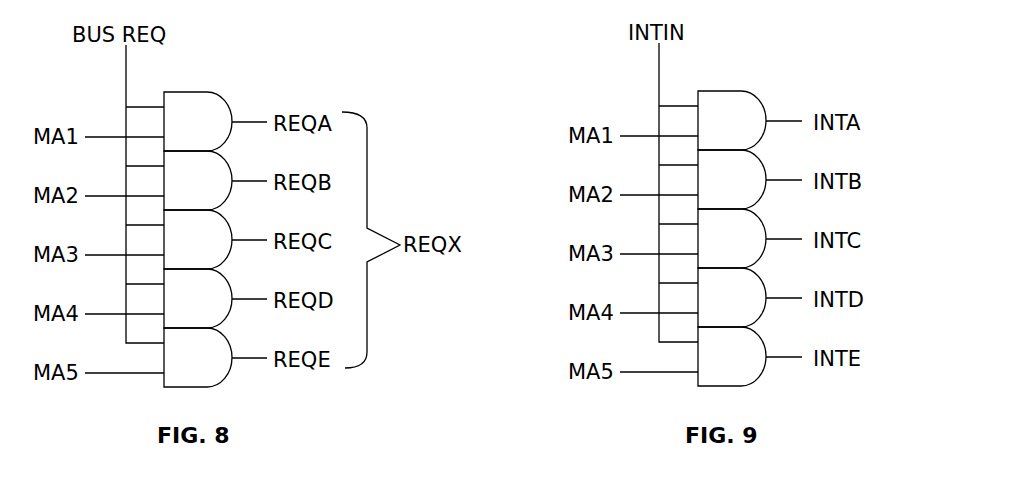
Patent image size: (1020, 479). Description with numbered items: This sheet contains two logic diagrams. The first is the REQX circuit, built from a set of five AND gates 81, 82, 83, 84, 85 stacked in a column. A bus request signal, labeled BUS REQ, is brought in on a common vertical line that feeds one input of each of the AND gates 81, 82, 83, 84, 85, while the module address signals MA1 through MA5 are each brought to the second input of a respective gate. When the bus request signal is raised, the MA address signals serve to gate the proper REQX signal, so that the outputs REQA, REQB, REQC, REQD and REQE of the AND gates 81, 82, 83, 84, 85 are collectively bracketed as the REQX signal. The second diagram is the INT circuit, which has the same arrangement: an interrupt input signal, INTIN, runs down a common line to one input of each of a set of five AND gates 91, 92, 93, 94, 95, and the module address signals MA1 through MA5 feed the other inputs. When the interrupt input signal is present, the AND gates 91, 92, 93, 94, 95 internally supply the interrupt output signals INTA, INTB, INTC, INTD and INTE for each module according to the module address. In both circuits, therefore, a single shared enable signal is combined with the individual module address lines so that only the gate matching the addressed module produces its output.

In FIG. 8, the AND gate 81 is at (203, 137).
In FIG. 8, the AND gate 82 is at (203, 196).
In FIG. 8, the AND gate 83 is at (203, 255).
In FIG. 8, the AND gate 84 is at (203, 314).
In FIG. 8, the AND gate 85 is at (203, 373).
In FIG. 9, the AND gate 91 is at (737, 136).
In FIG. 9, the AND gate 92 is at (737, 195).
In FIG. 9, the AND gate 93 is at (737, 254).
In FIG. 9, the AND gate 94 is at (737, 313).
In FIG. 9, the AND gate 95 is at (737, 372).